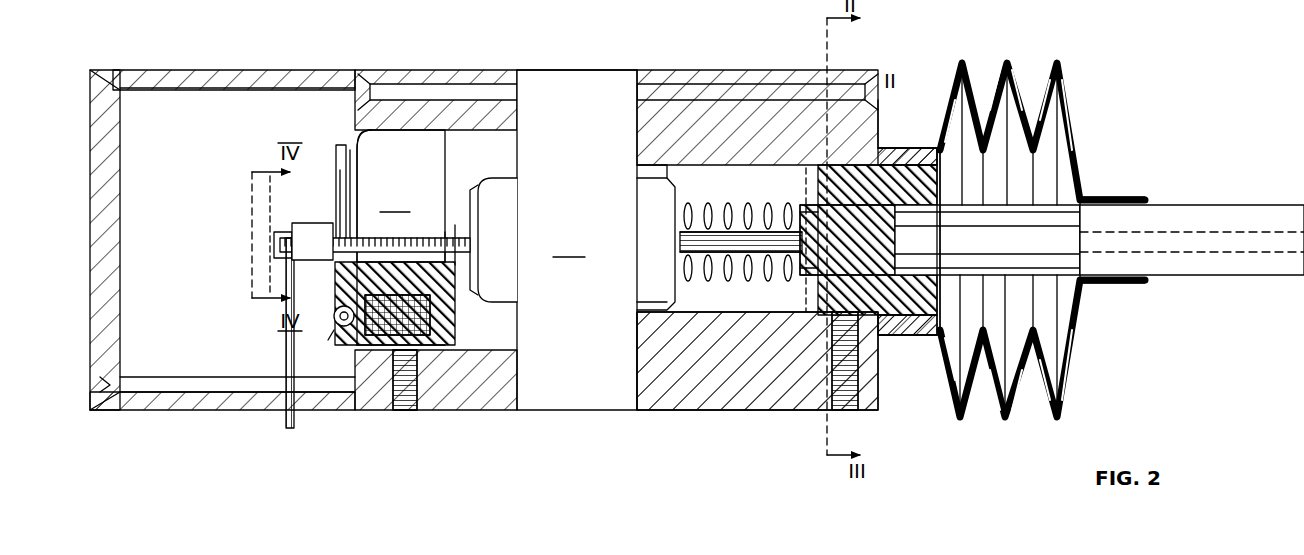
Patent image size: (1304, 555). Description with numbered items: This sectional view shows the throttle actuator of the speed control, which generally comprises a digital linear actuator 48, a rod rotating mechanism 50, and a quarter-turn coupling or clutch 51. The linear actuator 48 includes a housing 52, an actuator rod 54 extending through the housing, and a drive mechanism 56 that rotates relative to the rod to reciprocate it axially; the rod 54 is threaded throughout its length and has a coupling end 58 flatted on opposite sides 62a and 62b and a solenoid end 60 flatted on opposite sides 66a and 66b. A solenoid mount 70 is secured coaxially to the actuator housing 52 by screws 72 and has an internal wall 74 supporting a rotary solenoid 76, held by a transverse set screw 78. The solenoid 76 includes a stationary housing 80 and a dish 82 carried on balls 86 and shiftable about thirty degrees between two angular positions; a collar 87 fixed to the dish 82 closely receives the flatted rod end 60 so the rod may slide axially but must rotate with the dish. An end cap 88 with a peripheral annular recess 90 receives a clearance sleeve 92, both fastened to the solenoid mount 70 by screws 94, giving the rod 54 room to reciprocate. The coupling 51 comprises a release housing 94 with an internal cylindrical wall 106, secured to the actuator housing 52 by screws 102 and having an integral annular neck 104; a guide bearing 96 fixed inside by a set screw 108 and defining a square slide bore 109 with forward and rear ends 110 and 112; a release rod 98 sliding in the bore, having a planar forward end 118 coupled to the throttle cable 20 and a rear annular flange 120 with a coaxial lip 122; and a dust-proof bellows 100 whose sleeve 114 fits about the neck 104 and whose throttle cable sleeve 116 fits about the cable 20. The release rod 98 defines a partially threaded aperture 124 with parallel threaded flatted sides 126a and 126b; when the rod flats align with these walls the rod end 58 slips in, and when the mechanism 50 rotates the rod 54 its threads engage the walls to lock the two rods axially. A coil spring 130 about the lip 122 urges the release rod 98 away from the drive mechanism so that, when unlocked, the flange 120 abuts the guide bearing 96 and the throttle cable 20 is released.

The throttle cable 20 is at (1218, 202).
The digital linear actuator 48 is at (592, 66).
The rod rotating mechanism 50 is at (318, 128).
The quarter-turn coupling 51 is at (880, 160).
The actuator housing 52 is at (577, 240).
The actuator rod 54 is at (712, 290).
The drive mechanism 56 is at (495, 352).
The coupling end 58 is at (900, 245).
The solenoid end 60 is at (281, 248).
The flatted side 62a is at (812, 212).
The flatted side 62b is at (822, 285).
The flatted side 66a is at (292, 237).
The flatted side 66b is at (340, 265).
The solenoid mount 70 is at (402, 70).
The screws 72 is at (458, 86).
The internal wall 74 is at (495, 146).
The rotary solenoid 76 is at (383, 126).
The set screw 78 is at (405, 410).
The solenoid housing 80 is at (375, 347).
The dish 82 is at (341, 144).
The balls 86 is at (345, 327).
The collar 87 is at (320, 223).
The end cap 88 is at (105, 270).
The annular recess 90 is at (140, 70).
The clearance sleeve 92 is at (155, 400).
The screws 94 is at (128, 385).
The guide bearing 96 is at (932, 337).
The release rod 98 is at (880, 330).
The bellows 100 is at (1066, 60).
The screws 102 is at (855, 95).
The annular neck 104 is at (905, 142).
The internal cylindrical wall 106 is at (690, 170).
The set screw 108 is at (845, 410).
The slide bore 109 is at (942, 150).
The forward end 110 is at (935, 300).
The rear end 112 is at (825, 312).
The sleeve 114 is at (880, 340).
The throttle cable sleeve 116 is at (1125, 198).
The forward end 118 is at (1086, 216).
The annular flange 120 is at (806, 170).
The lip 122 is at (785, 262).
The partially threaded aperture 124 is at (900, 232).
The threaded flatted side 126a is at (905, 213).
The threaded flatted side 126b is at (900, 264).
The coil spring 130 is at (690, 292).